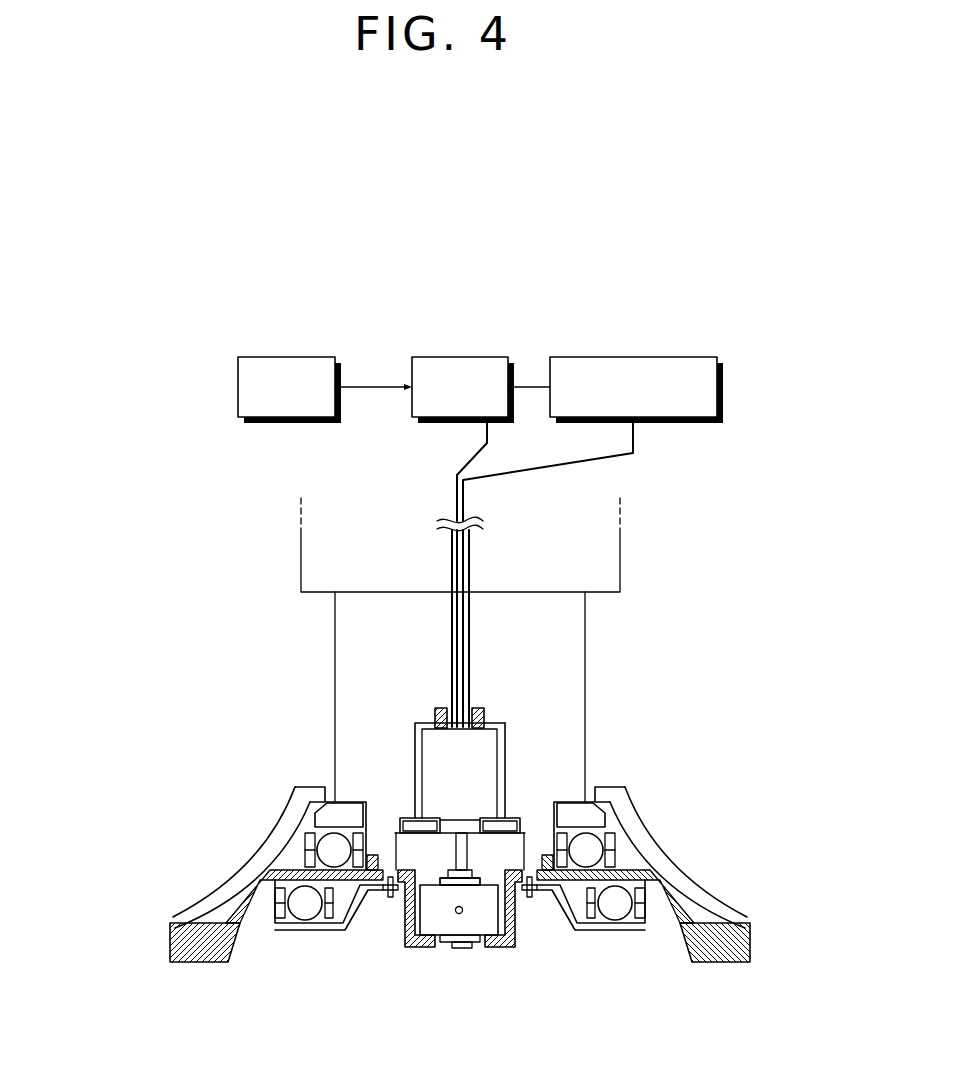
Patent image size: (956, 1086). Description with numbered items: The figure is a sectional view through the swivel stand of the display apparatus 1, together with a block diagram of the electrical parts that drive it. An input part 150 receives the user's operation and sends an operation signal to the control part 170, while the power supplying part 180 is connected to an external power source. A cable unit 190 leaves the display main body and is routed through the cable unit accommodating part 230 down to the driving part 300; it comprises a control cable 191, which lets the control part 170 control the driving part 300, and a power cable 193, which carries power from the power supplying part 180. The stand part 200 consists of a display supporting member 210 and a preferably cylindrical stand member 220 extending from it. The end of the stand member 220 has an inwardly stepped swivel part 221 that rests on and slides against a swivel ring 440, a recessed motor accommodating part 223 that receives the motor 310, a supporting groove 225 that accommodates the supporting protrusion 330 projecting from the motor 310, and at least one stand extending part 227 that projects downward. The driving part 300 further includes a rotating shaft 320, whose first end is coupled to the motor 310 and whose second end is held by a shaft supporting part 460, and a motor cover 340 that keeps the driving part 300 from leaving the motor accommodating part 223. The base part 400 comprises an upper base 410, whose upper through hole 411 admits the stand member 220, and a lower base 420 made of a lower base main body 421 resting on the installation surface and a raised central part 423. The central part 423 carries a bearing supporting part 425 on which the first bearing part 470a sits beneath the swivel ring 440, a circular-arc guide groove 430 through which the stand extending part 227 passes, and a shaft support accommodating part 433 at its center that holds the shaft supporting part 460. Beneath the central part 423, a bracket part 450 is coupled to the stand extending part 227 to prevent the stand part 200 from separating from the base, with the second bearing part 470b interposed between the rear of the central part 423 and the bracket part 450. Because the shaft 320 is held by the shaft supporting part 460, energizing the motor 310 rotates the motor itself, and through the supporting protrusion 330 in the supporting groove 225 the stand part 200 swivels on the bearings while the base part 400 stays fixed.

The display apparatus 1 is at (722, 334).
The input part 150 is at (283, 355).
The control part 170 is at (457, 355).
The power supplying part 180 is at (630, 355).
The cable unit 190 is at (545, 495).
The control cable 191 is at (480, 455).
The power cable 193 is at (567, 463).
The stand part 200 is at (524, 684).
The display supporting member 210 is at (620, 538).
The stand member 220 is at (577, 605).
The swivel part 221 is at (565, 800).
The motor accommodating part 223 is at (505, 748).
The supporting groove 225 is at (485, 711).
The stand extending part 227 is at (523, 850).
The cable unit accommodating part 230 is at (448, 621).
The driving part 300 is at (230, 635).
The motor 310 is at (435, 747).
The rotating shaft 320 is at (330, 863).
The supporting protrusion 330 is at (430, 716).
The motor cover 340 is at (398, 838).
The base part 400 is at (95, 790).
The upper base 410 is at (286, 816).
The upper through hole 411 is at (318, 930).
The lower base 420 is at (150, 820).
The lower base main body 421 is at (203, 922).
The central part 423 is at (292, 869).
The bearing supporting part 425 is at (532, 895).
The guide groove 430 is at (368, 918).
The shaft support accommodating part 433 is at (490, 886).
The swivel ring 440 is at (603, 813).
The bracket part 450 is at (616, 920).
The shaft supporting part 460 is at (443, 928).
The first bearing part 470a is at (593, 848).
The second bearing part 470b is at (302, 915).